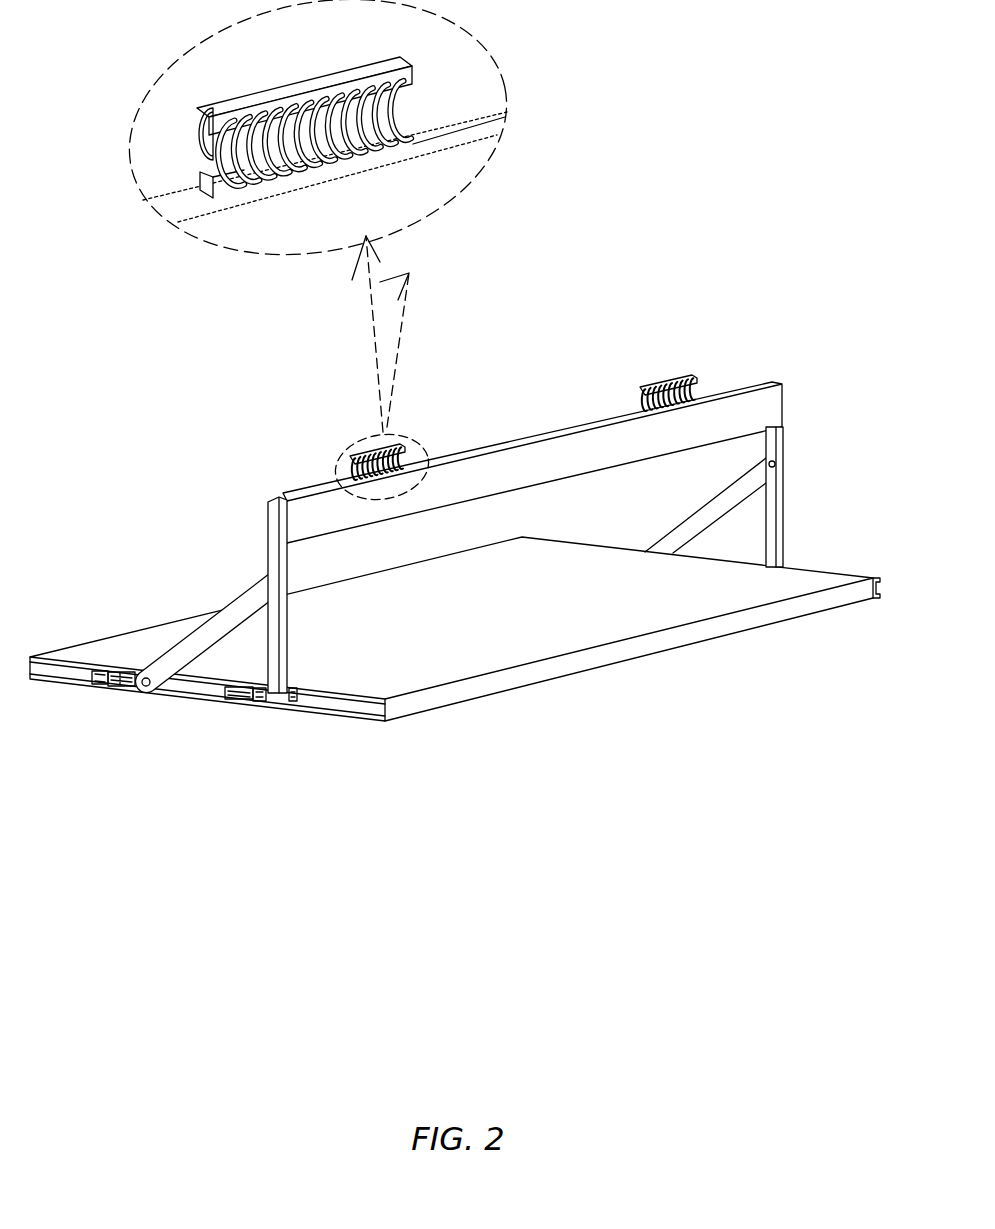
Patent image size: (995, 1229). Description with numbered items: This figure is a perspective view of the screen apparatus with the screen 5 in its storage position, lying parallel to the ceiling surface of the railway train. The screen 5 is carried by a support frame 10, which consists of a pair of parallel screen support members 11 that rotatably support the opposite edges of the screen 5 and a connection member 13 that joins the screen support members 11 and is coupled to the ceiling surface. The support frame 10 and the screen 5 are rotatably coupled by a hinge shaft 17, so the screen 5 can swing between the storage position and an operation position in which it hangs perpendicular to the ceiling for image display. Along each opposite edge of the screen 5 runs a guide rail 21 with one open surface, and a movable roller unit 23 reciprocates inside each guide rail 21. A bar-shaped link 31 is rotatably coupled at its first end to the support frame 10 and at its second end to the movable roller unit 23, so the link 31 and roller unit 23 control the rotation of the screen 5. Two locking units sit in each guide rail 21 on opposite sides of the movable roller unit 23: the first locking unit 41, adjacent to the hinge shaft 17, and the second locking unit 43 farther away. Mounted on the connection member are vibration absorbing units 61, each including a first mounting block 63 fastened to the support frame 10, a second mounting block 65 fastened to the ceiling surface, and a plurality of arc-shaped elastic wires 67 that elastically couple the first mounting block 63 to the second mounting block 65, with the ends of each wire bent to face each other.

The screen 5 is at (668, 660).
The support frame 10 is at (538, 537).
The screen support member 11 is at (278, 534).
The connection member 13 is at (772, 405).
The hinge shaft 17 is at (278, 704).
The guide rail 21 is at (363, 706).
The movable roller unit 23 is at (133, 690).
The link 31 is at (203, 635).
The first locking unit 41 is at (243, 702).
The second locking unit 43 is at (102, 688).
The vibration absorbing unit 61 is at (408, 414).
The first mounting block 63 is at (200, 188).
The second mounting block 65 is at (210, 107).
The elastic wire 67 is at (200, 130).